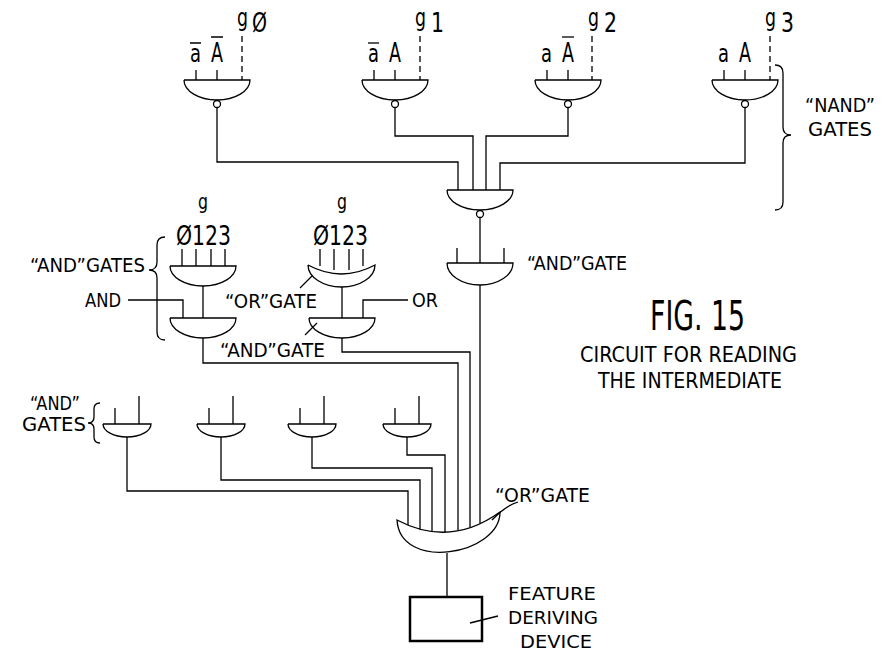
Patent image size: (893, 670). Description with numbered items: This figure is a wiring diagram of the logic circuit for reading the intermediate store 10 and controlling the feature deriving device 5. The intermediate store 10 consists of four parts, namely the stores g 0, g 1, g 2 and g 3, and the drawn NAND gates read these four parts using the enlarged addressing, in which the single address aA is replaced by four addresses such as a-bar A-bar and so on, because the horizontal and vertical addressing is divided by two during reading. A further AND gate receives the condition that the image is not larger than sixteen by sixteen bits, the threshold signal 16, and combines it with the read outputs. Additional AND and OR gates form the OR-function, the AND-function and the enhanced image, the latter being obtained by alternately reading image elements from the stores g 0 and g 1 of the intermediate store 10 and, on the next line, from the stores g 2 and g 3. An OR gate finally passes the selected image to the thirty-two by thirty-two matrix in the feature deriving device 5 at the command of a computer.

The feature deriving device 5 is at (418, 615).
The intermediate store 10 is at (506, 227).
The AND gate (≤16×16 condition) 16 is at (476, 240).
The AND gate g0 0 is at (255, 447).
The AND gate g1 1 is at (308, 450).
The AND gate g2 2 is at (360, 451).
The AND gate g3 3 is at (414, 451).